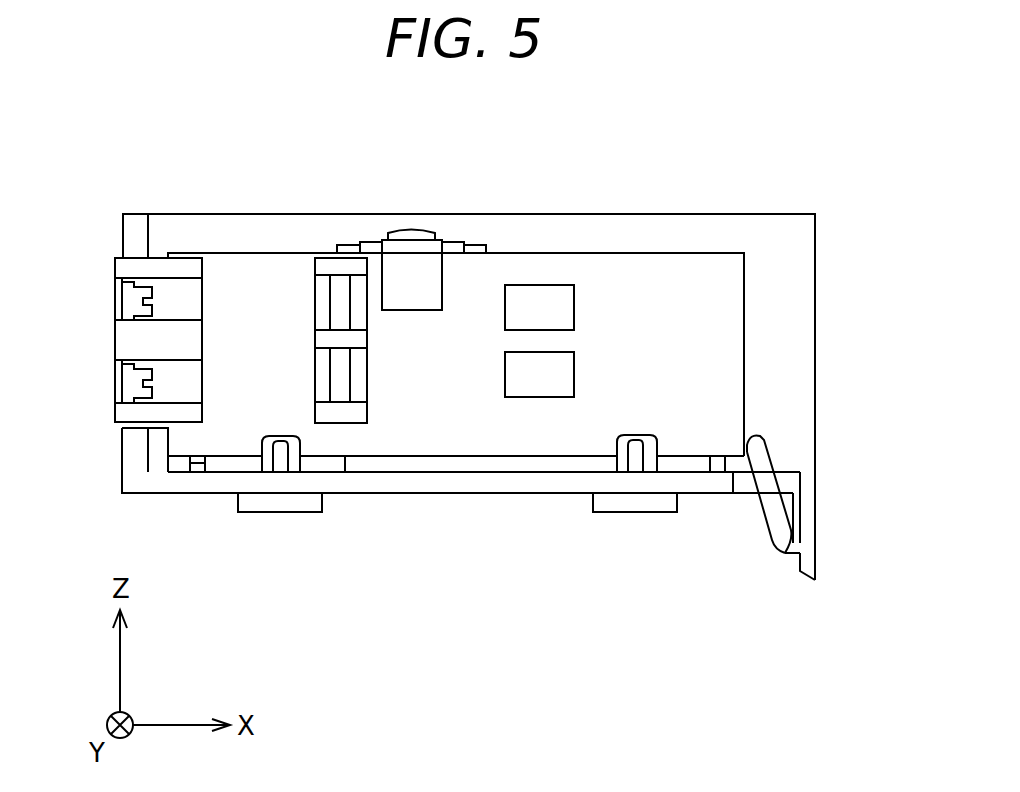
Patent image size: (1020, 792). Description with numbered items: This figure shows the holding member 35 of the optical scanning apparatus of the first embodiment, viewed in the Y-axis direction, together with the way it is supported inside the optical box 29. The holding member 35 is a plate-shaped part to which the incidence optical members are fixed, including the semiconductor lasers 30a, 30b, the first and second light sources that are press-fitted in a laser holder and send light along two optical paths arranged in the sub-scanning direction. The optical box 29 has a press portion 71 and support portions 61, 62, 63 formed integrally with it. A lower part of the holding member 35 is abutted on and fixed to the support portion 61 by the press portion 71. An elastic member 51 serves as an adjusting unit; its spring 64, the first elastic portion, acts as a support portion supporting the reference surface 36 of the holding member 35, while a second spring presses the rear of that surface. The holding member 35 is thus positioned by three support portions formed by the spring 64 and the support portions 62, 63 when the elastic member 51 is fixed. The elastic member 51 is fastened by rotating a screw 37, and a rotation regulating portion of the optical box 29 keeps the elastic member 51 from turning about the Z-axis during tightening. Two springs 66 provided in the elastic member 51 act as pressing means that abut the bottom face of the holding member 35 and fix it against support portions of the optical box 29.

The optical box 29 is at (138, 483).
The semiconductor laser 30a is at (132, 383).
The semiconductor laser 30b is at (132, 297).
The holding member 35 is at (746, 330).
The reference surface 36 is at (652, 280).
The screw 37 is at (428, 228).
The elastic member 51 is at (467, 243).
The support portion 61 is at (157, 452).
The support portion 62 is at (280, 448).
The support portion 63 is at (635, 447).
The spring 64 is at (413, 293).
The springs 66 is at (353, 244).
The press portion 71 is at (760, 437).